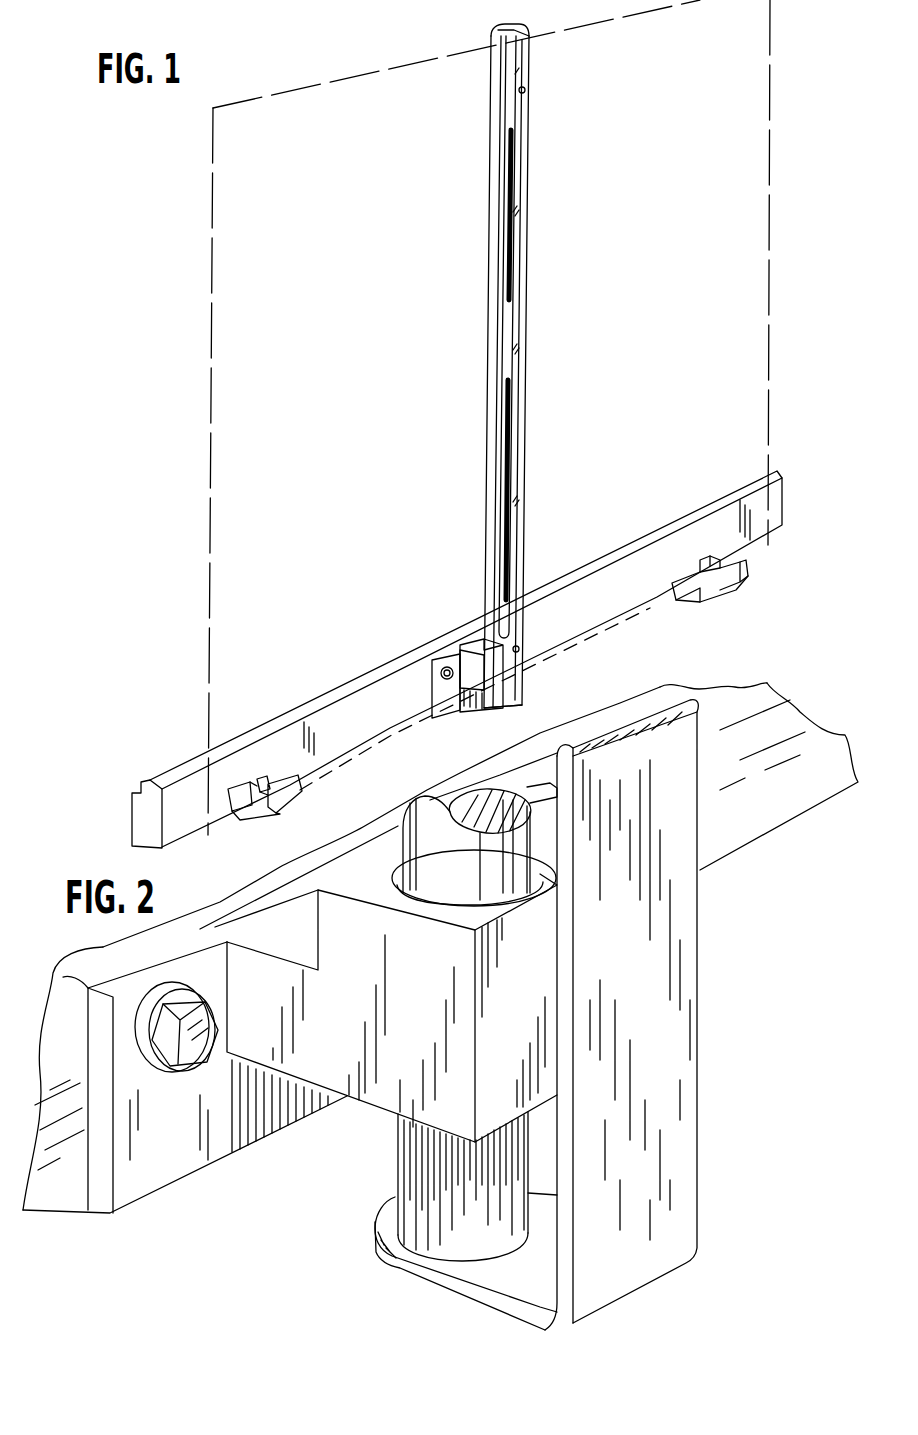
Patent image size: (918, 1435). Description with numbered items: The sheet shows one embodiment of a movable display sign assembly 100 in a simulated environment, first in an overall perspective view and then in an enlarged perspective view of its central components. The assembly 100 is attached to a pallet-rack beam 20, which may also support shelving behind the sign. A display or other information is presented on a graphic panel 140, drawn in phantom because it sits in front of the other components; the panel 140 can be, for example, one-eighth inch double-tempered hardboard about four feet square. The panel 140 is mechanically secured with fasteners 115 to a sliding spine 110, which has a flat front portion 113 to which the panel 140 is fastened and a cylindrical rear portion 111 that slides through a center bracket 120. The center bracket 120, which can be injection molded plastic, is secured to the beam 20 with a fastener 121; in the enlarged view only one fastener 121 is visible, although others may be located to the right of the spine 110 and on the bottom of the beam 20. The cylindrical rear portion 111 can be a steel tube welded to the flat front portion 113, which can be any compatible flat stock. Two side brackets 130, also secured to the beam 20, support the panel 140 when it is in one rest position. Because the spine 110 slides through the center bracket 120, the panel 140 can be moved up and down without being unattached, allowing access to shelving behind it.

In FIG. 1, the movable display sign assembly 100 is at (197, 219).
In FIG. 1, the pallet-rack beam 20 is at (132, 817).
In FIG. 2, the pallet-rack beam 20 is at (34, 1013).
In FIG. 1, the sliding spine 110 is at (523, 33).
In FIG. 2, the sliding spine 110 is at (640, 1286).
In FIG. 1, the cylindrical rear portion 111 is at (500, 291).
In FIG. 2, the cylindrical rear portion 111 is at (467, 873).
In FIG. 1, the flat front portion 113 is at (531, 264).
In FIG. 2, the flat front portion 113 is at (690, 998).
In FIG. 1, the fasteners 115 is at (527, 91).
In FIG. 1, the center bracket 120 is at (450, 697).
In FIG. 2, the center bracket 120 is at (257, 1142).
In FIG. 1, the fastener 121 is at (432, 688).
In FIG. 2, the fastener 121 is at (178, 1068).
In FIG. 1, the side brackets 130 is at (298, 788).
In FIG. 1, the graphic panel 140 is at (770, 193).